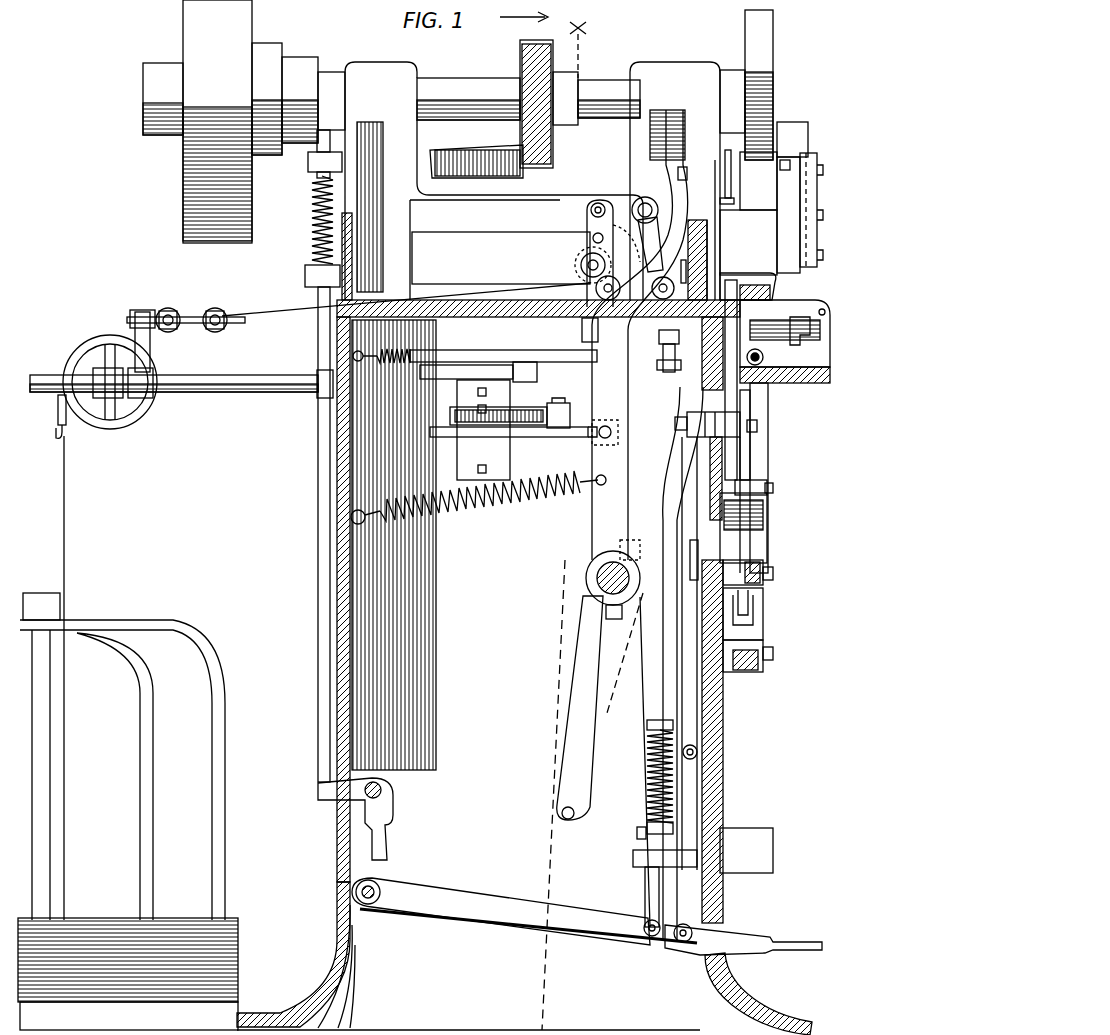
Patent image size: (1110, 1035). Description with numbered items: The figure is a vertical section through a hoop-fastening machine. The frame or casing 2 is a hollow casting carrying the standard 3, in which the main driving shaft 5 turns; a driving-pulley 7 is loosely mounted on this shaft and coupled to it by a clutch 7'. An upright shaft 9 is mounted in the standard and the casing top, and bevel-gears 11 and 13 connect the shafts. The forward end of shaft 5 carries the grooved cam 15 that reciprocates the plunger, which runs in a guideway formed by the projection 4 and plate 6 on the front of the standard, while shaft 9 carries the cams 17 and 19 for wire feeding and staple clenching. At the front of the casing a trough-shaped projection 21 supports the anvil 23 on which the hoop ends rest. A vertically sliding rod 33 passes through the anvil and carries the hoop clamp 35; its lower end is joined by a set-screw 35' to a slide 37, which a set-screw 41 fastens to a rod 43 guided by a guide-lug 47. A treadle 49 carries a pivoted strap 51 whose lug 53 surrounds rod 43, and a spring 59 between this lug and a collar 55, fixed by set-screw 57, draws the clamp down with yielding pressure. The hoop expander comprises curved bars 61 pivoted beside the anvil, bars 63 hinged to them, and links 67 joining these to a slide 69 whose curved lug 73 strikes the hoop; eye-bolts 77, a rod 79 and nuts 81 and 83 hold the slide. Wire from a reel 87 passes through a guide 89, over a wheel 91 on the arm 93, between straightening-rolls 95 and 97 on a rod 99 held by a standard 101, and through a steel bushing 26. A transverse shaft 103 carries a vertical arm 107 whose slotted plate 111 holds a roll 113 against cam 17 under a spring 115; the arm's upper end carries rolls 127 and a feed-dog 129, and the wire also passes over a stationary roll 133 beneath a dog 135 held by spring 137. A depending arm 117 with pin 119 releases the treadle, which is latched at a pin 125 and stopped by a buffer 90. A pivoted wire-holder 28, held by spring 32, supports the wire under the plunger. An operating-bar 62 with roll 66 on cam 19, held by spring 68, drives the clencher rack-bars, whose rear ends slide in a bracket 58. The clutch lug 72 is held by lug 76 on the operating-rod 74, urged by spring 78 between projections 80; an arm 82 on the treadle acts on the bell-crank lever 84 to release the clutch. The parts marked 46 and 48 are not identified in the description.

The frame or casing 2 is at (524, 667).
The standard 3 is at (531, 181).
The projection 4 is at (732, 175).
The main or driving shaft 5 is at (457, 87).
The plate 6 is at (808, 150).
The driving-pulley 7 is at (196, 126).
The clutch 7' is at (287, 91).
The upright shaft 9 is at (497, 256).
The bevel-gear 11 is at (555, 142).
The bevel-gear 13 is at (436, 158).
The grooved cam 15 is at (771, 96).
The cam 17 is at (524, 415).
The cam 19 is at (452, 373).
The projection 21 is at (800, 384).
The anvil 23 is at (786, 310).
The steel bushing 26 is at (683, 258).
The wire-holder 28 is at (748, 242).
The spring 32 is at (786, 196).
The vertically-sliding rod 33 is at (737, 400).
The hoop clamp or dog 35 is at (748, 272).
The set-screw 35' is at (775, 435).
The slide 37 is at (690, 421).
The set-screw 41 is at (680, 432).
The rod 43 is at (665, 518).
The pivot pin 46 is at (752, 344).
The guide-lug 47 is at (633, 859).
The screw 48 is at (804, 328).
The treadle 49 is at (740, 941).
The strap 51 is at (645, 903).
The lug 53 is at (647, 725).
The collar 55 is at (637, 834).
The set-screw 57 is at (645, 831).
The bracket or support 58 is at (598, 333).
The spring 59 is at (647, 790).
The curved bars 61 is at (760, 466).
The operating-bar 62 is at (598, 343).
The bars 63 is at (760, 528).
The roll or pin 66 is at (537, 374).
The links 67 is at (752, 578).
The spring 68 is at (398, 368).
The slide 69 is at (743, 615).
The lug 72 is at (312, 146).
The curved lug 73 is at (765, 655).
The operating-rod 74 is at (318, 425).
The lug 76 is at (312, 193).
The eye-bolts 77 is at (688, 572).
The spring 78 is at (312, 246).
The rod 79 is at (700, 554).
The projections 80 is at (323, 218).
The nut 81 is at (774, 575).
The projecting arm 82 is at (388, 871).
The nut 83 is at (774, 656).
The bell-crank lever 84 is at (395, 804).
The reel 87 is at (226, 857).
The guide 89 is at (60, 436).
The block 90 is at (760, 874).
The wheel 91 is at (138, 426).
The arm 93 is at (230, 393).
The straightening-roll 95 is at (172, 333).
The straightening-roll 97 is at (222, 330).
The rod 99 is at (245, 320).
The standard 101 is at (146, 306).
The transverse shaft 103 is at (586, 576).
The vertical arm 107 is at (608, 489).
The slotted plate 111 is at (523, 437).
The roll 113 is at (568, 405).
The spring 115 is at (497, 507).
The depending arm 117 is at (575, 739).
The pin 119 is at (561, 818).
The pin 125 is at (648, 940).
The rolls 127 is at (581, 266).
The feed-dog 129 is at (625, 250).
The stationary roll 133 is at (655, 293).
The dog 135 is at (653, 203).
The spring 137 is at (679, 172).